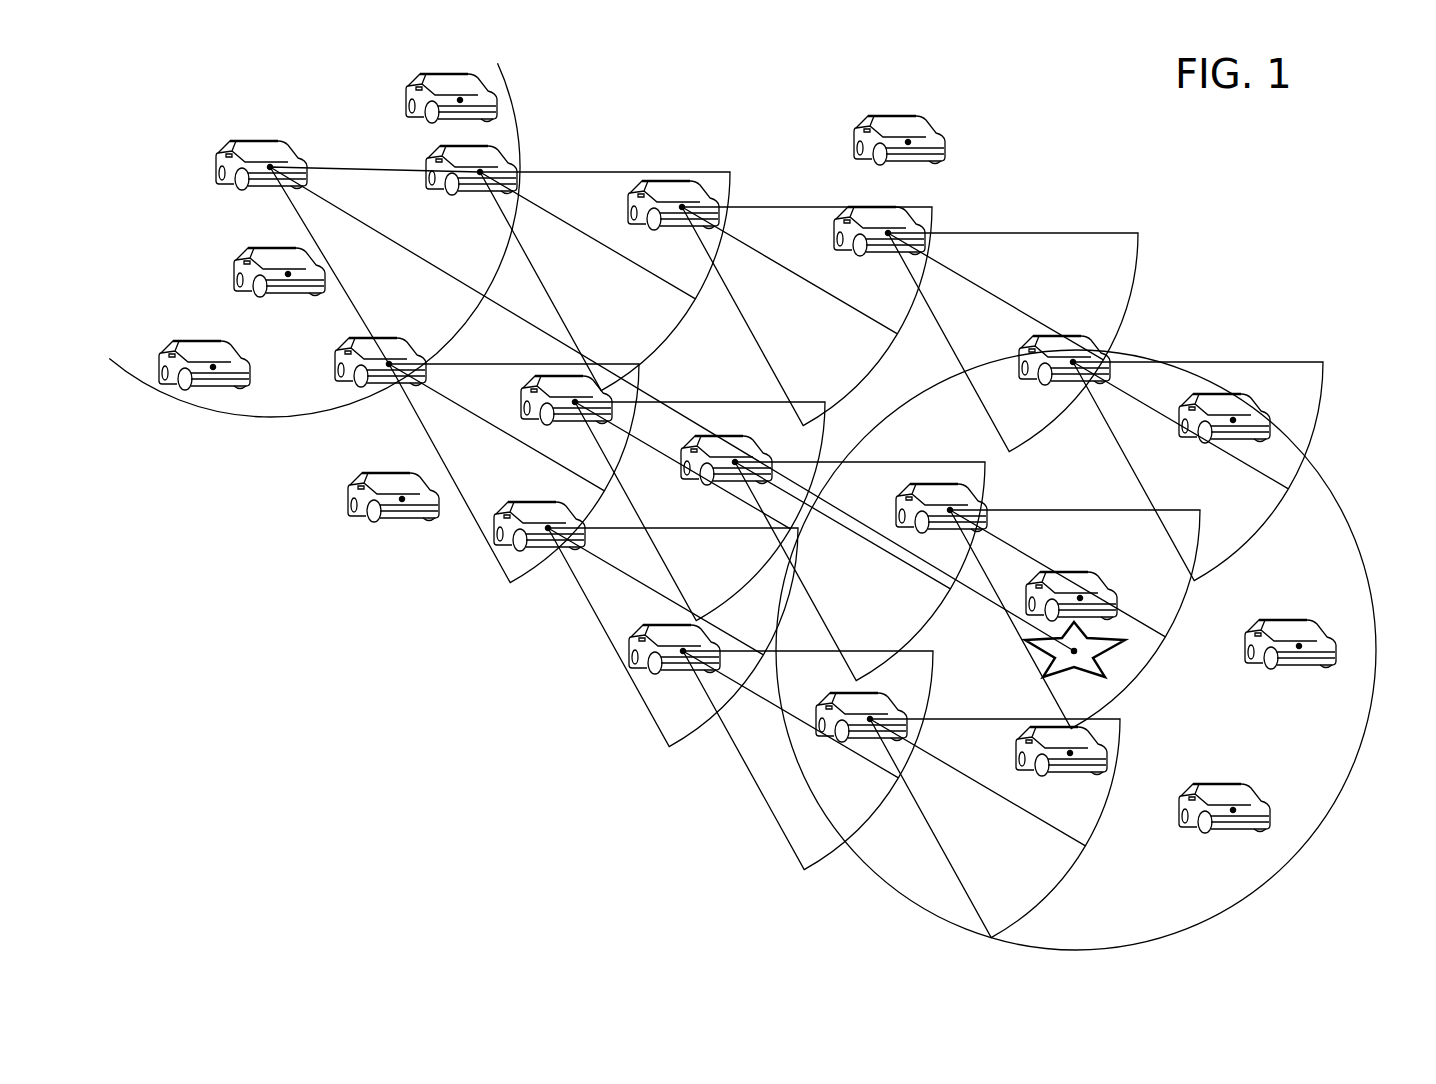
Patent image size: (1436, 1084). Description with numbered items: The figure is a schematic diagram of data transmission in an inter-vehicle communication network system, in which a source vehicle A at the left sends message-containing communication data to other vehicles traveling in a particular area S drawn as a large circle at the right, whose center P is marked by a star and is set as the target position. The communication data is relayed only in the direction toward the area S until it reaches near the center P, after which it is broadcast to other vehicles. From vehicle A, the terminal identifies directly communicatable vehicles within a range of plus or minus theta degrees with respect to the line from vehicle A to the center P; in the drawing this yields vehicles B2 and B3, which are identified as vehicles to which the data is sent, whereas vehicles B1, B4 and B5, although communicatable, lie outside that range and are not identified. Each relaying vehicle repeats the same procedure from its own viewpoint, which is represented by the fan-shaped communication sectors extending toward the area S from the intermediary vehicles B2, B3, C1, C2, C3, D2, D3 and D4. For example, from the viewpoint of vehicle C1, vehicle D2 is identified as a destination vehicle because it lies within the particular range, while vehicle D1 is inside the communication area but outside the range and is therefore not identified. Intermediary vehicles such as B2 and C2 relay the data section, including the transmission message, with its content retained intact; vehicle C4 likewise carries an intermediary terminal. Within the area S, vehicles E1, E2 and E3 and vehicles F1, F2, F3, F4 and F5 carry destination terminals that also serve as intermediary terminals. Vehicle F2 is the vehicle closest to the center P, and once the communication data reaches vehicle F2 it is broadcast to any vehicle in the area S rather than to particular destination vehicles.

The vehicle A is at (261, 151).
The vehicle B1 is at (432, 98).
The vehicle B2 is at (471, 189).
The vehicle B3 is at (380, 349).
The vehicle B4 is at (279, 260).
The vehicle B5 is at (204, 353).
The vehicle C1 is at (654, 205).
The vehicle C2 is at (547, 400).
The vehicle C3 is at (539, 515).
The vehicle C4 is at (393, 484).
The vehicle D1 is at (899, 127).
The vehicle D2 is at (861, 231).
The vehicle D3 is at (726, 449).
The vehicle D4 is at (671, 637).
The vehicle E1 is at (1064, 346).
The vehicle E2 is at (926, 505).
The vehicle E3 is at (856, 704).
The vehicle F1 is at (1227, 409).
The vehicle F2 is at (1071, 583).
The vehicle F3 is at (1044, 751).
The vehicle F4 is at (1290, 630).
The vehicle F5 is at (1224, 795).
The center P is at (1075, 662).
The particular area S is at (1348, 521).